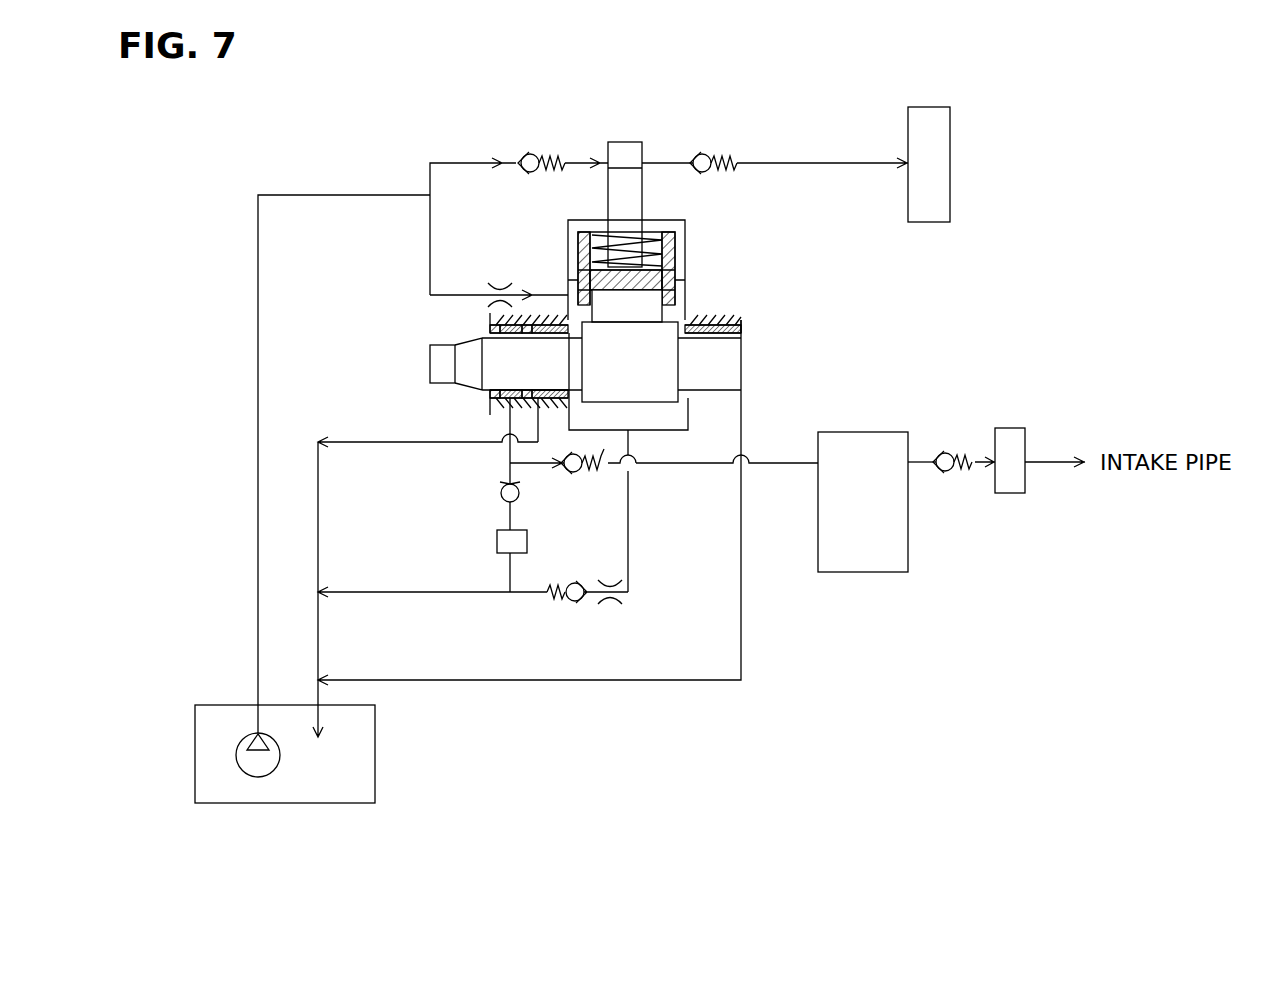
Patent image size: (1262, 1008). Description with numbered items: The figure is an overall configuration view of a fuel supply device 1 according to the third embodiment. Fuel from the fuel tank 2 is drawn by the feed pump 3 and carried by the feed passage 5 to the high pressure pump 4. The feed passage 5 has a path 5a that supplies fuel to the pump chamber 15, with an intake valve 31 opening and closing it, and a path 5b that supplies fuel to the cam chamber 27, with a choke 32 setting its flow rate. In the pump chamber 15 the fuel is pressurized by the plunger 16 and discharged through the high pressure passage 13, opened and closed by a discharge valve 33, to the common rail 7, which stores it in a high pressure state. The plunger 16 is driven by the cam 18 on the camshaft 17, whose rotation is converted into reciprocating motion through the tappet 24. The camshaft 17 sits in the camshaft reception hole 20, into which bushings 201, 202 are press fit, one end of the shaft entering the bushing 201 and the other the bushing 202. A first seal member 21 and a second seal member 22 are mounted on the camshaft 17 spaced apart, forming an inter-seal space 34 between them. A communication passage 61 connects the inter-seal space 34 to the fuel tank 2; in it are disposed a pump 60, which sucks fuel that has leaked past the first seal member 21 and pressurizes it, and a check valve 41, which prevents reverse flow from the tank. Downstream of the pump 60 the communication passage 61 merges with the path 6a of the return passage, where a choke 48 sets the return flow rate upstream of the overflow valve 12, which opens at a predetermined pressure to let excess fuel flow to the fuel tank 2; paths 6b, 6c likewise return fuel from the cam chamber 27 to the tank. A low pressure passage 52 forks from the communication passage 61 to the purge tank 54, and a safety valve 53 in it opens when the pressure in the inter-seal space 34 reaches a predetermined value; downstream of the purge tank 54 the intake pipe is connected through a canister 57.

The fuel supply device 1 is at (1029, 115).
The fuel tank 2 is at (200, 762).
The feed pump 3 is at (243, 752).
The high pressure pump 4 is at (662, 147).
The feed passage 5 is at (358, 195).
The path 5a is at (481, 163).
The path 5b is at (462, 295).
The path 6a is at (628, 533).
The path 6b is at (353, 442).
The path 6c is at (743, 657).
The common rail 7 is at (933, 222).
The overflow valve 12 is at (571, 603).
The high pressure passage 13 is at (821, 165).
The pump chamber 15 is at (615, 150).
The plunger 16 is at (622, 198).
The camshaft 17 is at (472, 352).
The cam 18 is at (658, 375).
The camshaft reception hole 20 is at (545, 400).
The first seal member 21 is at (525, 420).
The second seal member 22 is at (493, 400).
The tappet 24 is at (672, 287).
The cam chamber 27 is at (680, 420).
The intake valve 31 is at (531, 153).
The choke 32 is at (497, 290).
The discharge valve 33 is at (706, 153).
The inter-seal space 34 is at (527, 400).
The check valve 41 is at (502, 495).
The choke 48 is at (610, 600).
The low pressure passage 52 is at (709, 471).
The safety valve 53 is at (574, 473).
The purge tank 54 is at (862, 572).
The canister 57 is at (1010, 493).
The pump 60 is at (497, 540).
The communication passage 61 is at (510, 470).
The bushing 201 is at (508, 316).
The bushing 202 is at (735, 320).